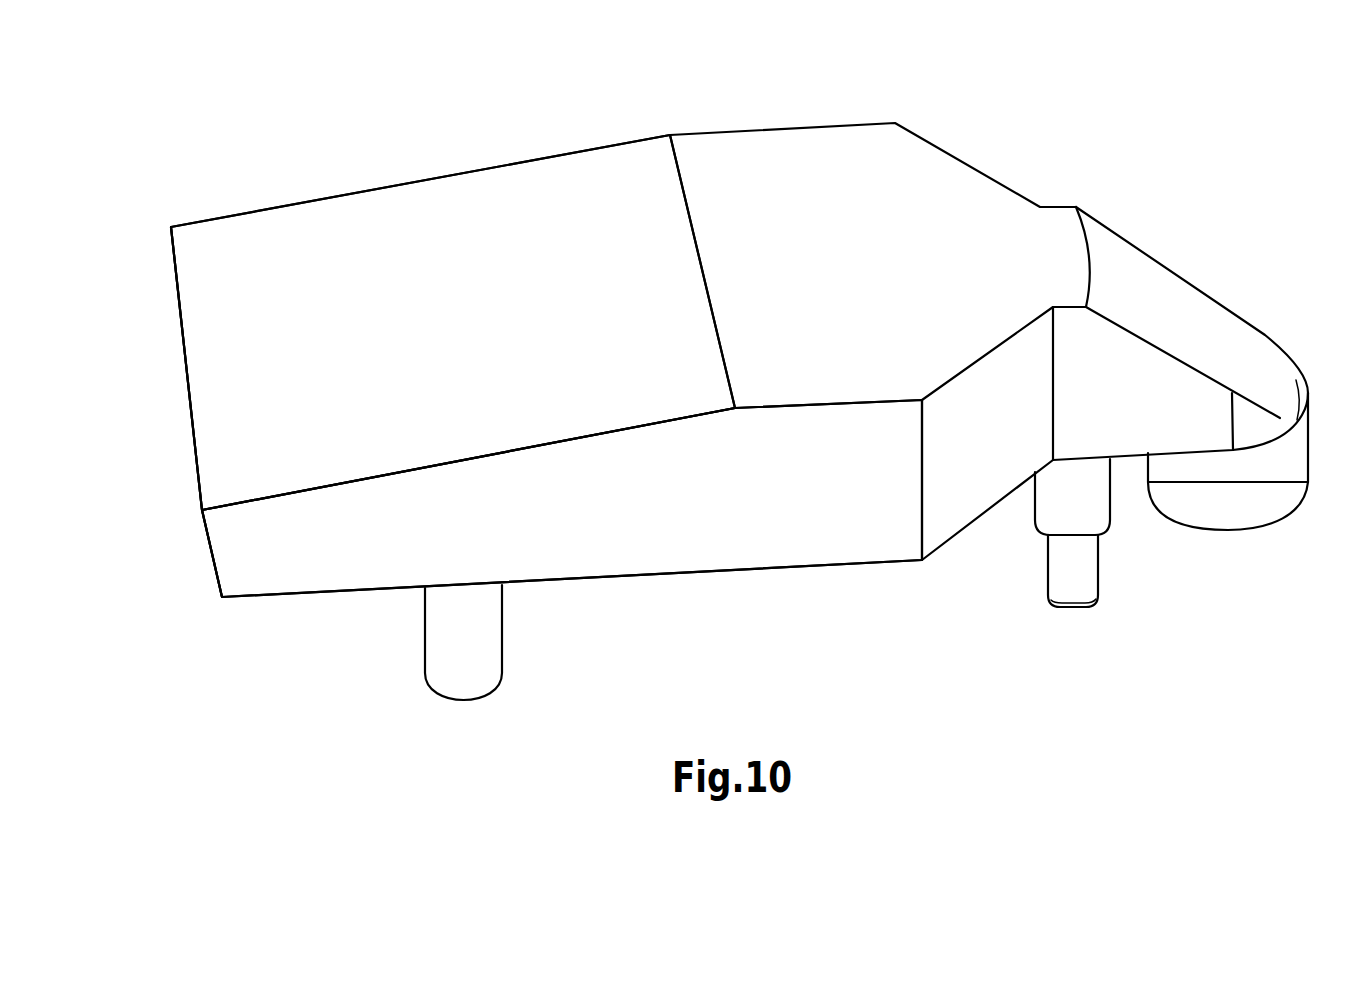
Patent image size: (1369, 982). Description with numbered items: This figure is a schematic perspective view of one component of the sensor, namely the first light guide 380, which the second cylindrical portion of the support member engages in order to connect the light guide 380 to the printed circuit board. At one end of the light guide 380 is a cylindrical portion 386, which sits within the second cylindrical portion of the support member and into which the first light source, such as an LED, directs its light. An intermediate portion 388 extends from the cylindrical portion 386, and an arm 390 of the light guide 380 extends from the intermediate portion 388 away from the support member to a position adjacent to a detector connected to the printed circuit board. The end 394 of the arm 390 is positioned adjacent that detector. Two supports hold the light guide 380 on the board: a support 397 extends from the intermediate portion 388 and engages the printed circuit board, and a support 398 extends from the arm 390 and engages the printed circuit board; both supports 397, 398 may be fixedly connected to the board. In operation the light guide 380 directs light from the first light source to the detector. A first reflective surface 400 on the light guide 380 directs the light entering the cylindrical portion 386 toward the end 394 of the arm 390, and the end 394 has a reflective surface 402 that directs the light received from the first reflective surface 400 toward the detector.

The light guide 380 is at (395, 155).
The reflective surface 402 is at (287, 360).
The end 394 is at (272, 552).
The arm 390 is at (662, 527).
The support 398 is at (460, 663).
The support 397 is at (1063, 570).
The intermediate portion 388 is at (1127, 417).
The cylindrical portion 386 is at (1235, 507).
The first reflective surface 400 is at (1205, 325).